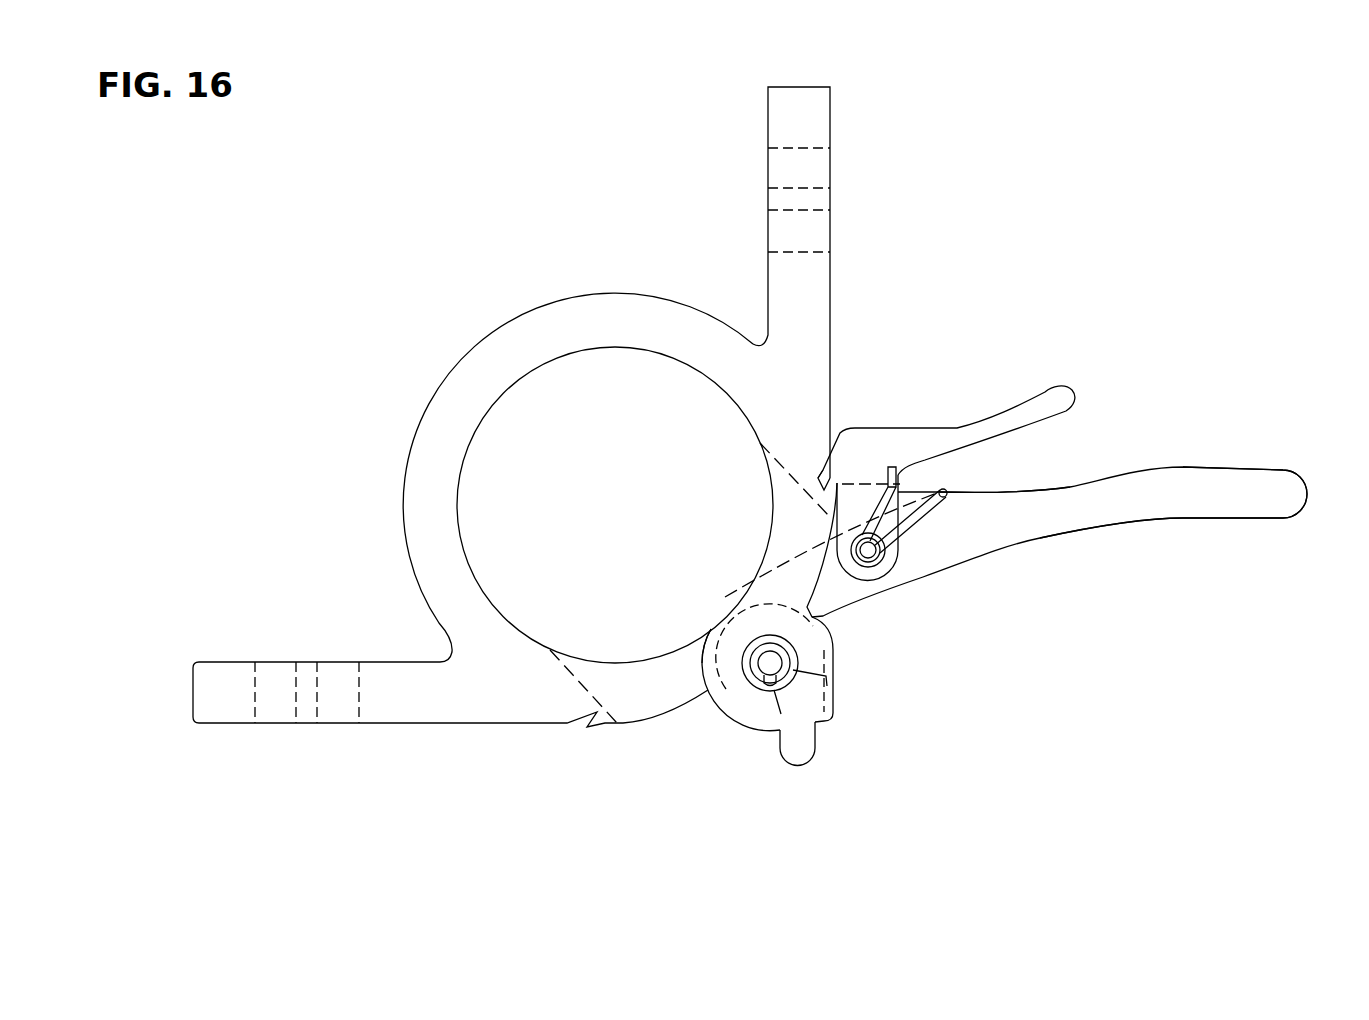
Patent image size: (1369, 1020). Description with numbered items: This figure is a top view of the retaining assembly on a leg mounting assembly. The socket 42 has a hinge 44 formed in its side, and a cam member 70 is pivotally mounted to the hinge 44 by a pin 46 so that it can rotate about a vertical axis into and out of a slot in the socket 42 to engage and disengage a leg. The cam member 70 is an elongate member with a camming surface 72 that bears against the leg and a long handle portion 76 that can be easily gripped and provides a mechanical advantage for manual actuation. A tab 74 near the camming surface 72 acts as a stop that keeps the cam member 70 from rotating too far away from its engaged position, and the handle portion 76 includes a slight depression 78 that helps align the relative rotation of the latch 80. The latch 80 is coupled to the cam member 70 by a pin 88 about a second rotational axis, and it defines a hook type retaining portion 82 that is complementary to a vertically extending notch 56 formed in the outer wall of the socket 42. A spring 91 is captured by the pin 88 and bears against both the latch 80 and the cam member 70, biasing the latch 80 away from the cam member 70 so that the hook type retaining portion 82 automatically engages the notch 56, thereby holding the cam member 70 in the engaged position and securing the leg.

The socket 42 is at (618, 312).
The hinge 44 is at (843, 680).
The pin 46 is at (768, 666).
The notch 56 is at (823, 483).
The cam member 70 is at (1268, 533).
The camming surface 72 is at (718, 613).
The tab 74 is at (797, 756).
The handle portion 76 is at (1073, 523).
The depression 78 is at (1072, 487).
The latch 80 is at (905, 440).
The hook type retaining portion 82 is at (823, 478).
The pin 88 is at (873, 560).
The spring 91 is at (907, 532).